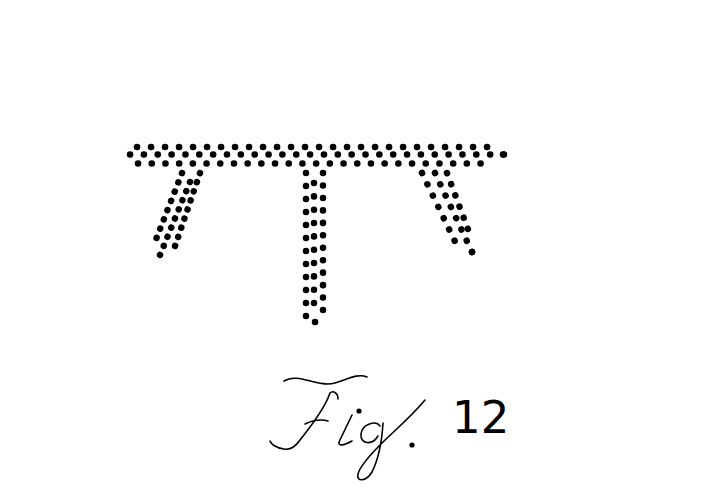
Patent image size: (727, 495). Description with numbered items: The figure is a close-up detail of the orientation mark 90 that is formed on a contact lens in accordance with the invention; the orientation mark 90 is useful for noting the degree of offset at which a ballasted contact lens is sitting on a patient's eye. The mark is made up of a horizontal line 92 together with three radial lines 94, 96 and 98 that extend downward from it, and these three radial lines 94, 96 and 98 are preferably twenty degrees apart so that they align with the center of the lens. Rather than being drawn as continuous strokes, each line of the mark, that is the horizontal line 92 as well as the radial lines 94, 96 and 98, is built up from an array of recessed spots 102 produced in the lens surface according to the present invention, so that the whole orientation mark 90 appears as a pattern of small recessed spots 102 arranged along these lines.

The orientation mark 90 is at (328, 187).
The horizontal line 92 is at (238, 145).
The radial line 94 is at (158, 235).
The radial line 96 is at (307, 285).
The radial line 98 is at (463, 222).
The recessed spots 102 is at (497, 156).